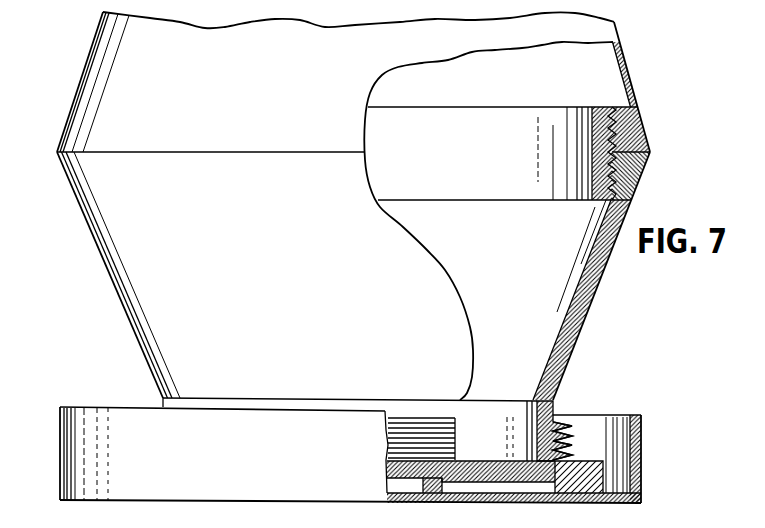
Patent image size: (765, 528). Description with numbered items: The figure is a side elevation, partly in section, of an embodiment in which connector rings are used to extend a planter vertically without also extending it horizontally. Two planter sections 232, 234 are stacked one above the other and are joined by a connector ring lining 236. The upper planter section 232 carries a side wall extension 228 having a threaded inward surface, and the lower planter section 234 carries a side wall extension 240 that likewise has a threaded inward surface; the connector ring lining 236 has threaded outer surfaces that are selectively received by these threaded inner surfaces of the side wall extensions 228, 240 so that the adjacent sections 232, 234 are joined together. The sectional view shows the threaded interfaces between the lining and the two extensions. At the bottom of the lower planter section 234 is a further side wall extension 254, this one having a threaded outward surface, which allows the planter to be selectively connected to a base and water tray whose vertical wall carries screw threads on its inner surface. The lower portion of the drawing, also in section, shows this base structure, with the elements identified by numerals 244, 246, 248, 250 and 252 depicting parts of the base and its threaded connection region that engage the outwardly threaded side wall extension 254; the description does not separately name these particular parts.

The side wall extension 228 is at (631, 138).
The planter section 232 is at (314, 54).
The planter section 234 is at (271, 210).
The connector ring lining 236 is at (511, 122).
The side wall extension 240 is at (631, 173).
The base 244 is at (588, 480).
The support block 246 is at (432, 487).
The threaded stub 248 is at (560, 414).
The threaded bore 250 is at (566, 430).
The sleeve 252 is at (532, 432).
The side wall extension 254 is at (432, 440).